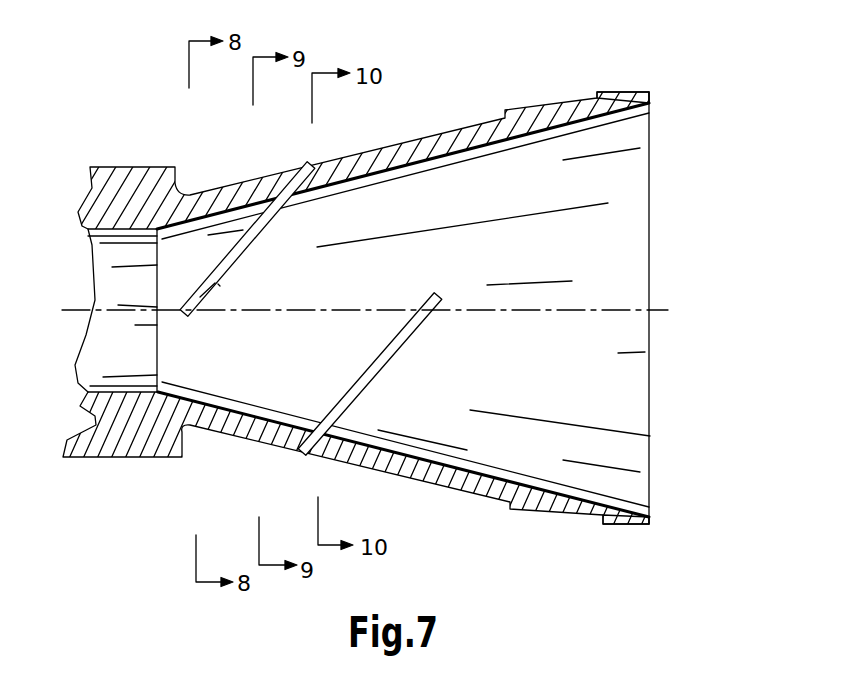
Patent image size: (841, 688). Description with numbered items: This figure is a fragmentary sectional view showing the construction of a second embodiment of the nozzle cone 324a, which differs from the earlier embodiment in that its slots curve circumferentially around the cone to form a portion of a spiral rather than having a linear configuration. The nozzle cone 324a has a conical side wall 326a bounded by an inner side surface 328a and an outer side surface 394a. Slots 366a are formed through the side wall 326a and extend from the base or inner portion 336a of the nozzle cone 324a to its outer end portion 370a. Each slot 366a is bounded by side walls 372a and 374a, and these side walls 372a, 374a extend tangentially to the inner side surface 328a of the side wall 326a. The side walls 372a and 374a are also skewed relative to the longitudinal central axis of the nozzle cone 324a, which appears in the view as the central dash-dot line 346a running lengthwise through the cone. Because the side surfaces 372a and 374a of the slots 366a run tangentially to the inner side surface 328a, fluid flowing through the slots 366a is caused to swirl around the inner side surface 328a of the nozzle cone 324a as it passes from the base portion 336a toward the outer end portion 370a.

The nozzle cone 324a is at (631, 87).
The conical side wall 326a is at (458, 136).
The inner side surface 328a is at (623, 410).
The base or inner portion 336a is at (133, 200).
The longitudinal axis 346a is at (660, 300).
The slots 366a is at (366, 365).
The outer end portion 370a is at (630, 187).
The side wall of slot 372a is at (218, 284).
The side wall of slot 374a is at (200, 297).
The outer side surface 394a is at (480, 488).